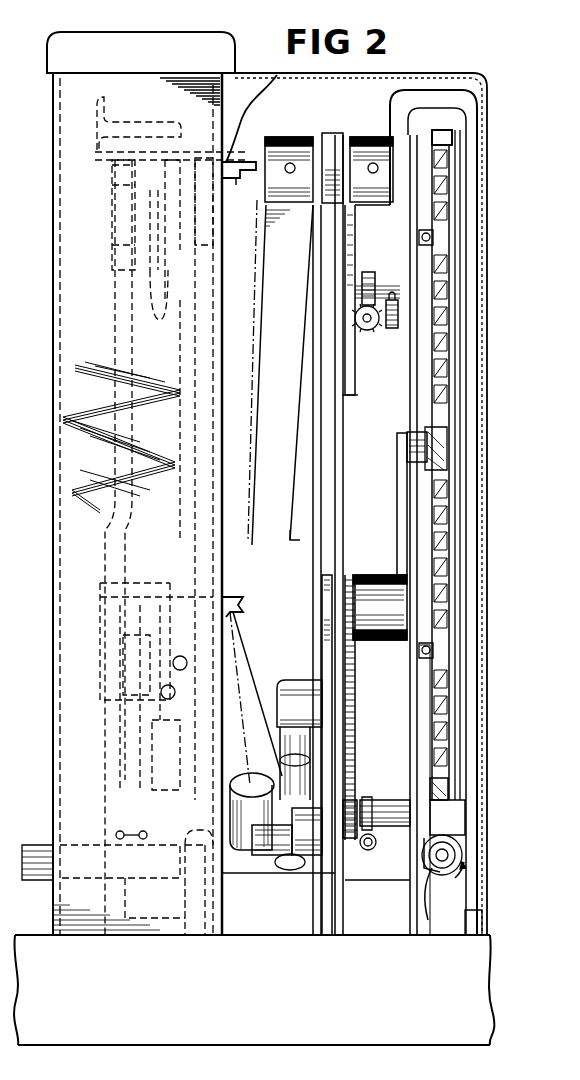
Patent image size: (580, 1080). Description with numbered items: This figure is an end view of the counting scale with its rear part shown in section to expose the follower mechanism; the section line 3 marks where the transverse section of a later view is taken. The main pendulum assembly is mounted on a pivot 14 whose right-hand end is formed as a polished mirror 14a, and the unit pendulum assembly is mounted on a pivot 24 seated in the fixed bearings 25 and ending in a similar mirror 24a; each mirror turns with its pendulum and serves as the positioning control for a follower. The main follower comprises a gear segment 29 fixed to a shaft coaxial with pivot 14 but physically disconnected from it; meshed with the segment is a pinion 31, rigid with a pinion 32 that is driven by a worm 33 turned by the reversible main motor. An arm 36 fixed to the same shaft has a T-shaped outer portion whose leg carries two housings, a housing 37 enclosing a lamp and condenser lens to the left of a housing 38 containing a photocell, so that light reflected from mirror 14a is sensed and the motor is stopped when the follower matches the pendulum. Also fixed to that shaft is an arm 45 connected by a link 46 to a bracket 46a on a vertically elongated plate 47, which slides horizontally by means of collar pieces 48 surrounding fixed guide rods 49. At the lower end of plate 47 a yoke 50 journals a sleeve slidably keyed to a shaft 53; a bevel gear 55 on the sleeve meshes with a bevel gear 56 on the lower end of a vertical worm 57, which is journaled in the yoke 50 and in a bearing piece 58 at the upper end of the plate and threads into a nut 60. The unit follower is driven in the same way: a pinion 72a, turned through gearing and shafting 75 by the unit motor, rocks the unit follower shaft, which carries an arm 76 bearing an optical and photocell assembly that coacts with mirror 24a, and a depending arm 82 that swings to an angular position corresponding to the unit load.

The section line 3- 3 is at (197, 25).
The pivot 14 is at (231, 597).
The mirror 14a is at (240, 605).
The pivot 24 is at (236, 165).
The mirror 24a is at (246, 180).
The fixed bearings 25 is at (112, 177).
The gear segment 29 is at (356, 745).
The pinion 31 is at (355, 805).
The pinion 32 is at (375, 802).
The worm 33 is at (376, 847).
The arm 36 is at (322, 649).
The housing 37 is at (235, 855).
The housing 38 is at (288, 870).
The arm 45 is at (397, 506).
The link 46 is at (410, 437).
The bracket 46a is at (425, 432).
The plate 47 is at (445, 525).
The collar pieces 48 is at (420, 238).
The guide rods 49 is at (421, 651).
The yoke 50 is at (445, 824).
The shaft 53 is at (434, 872).
The bevel gear 55 is at (428, 918).
The bevel gear 56 is at (462, 840).
The worm 57 is at (430, 700).
The bearing piece 58 is at (444, 130).
The nut 60 is at (433, 782).
The pinion 72a is at (372, 270).
The gearing and shafting 75 is at (384, 350).
The arm 76 is at (290, 545).
The depending arm 82 is at (465, 354).